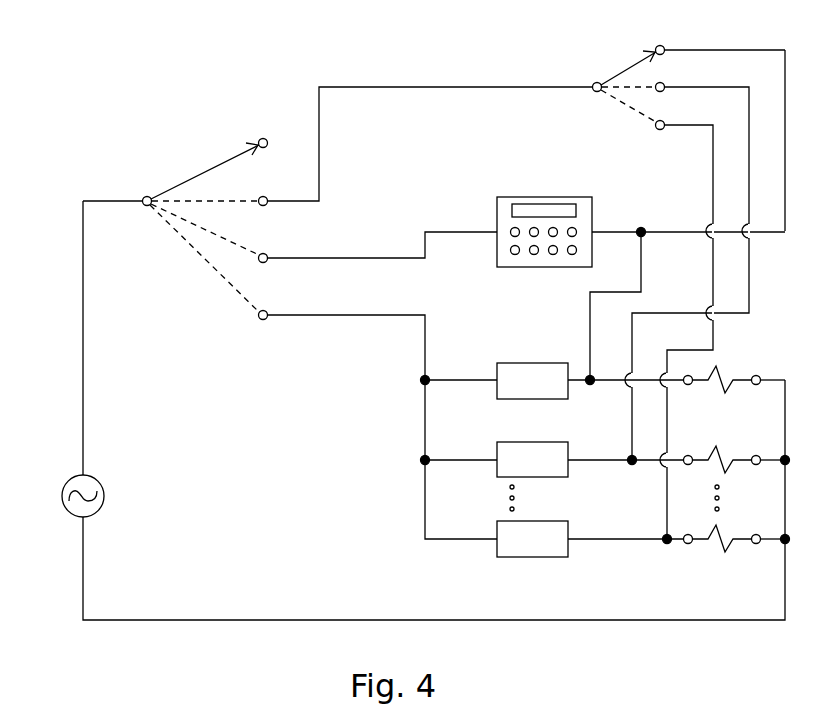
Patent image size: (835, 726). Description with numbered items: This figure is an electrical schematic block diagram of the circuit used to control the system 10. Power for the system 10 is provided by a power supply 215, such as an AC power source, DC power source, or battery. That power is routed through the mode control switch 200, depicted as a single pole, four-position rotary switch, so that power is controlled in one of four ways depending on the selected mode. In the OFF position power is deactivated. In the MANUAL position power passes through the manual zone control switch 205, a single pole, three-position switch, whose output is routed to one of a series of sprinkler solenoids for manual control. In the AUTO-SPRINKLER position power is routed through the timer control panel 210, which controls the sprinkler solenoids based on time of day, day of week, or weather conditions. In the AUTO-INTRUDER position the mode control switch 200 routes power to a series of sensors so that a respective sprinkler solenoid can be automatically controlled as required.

The system 10 is at (58, 132).
The mode control switch 200 is at (250, 149).
The manual zone control switch 205 is at (597, 82).
The timer control panel 210 is at (520, 196).
The power supply 215 is at (68, 481).